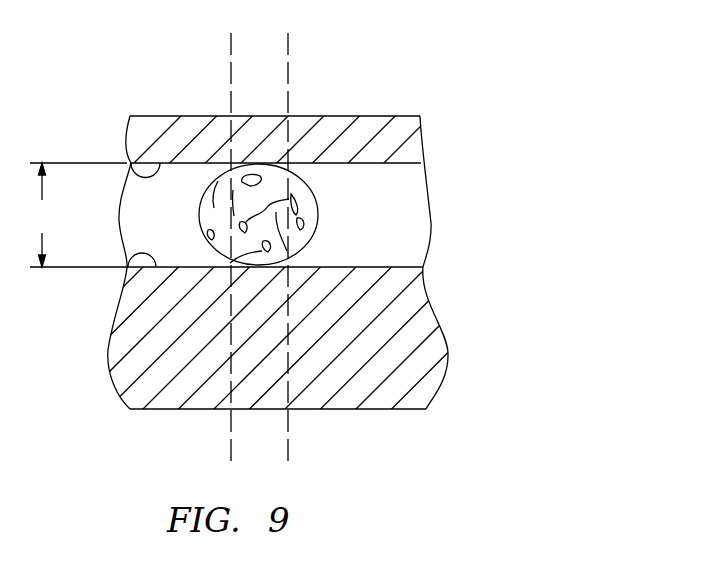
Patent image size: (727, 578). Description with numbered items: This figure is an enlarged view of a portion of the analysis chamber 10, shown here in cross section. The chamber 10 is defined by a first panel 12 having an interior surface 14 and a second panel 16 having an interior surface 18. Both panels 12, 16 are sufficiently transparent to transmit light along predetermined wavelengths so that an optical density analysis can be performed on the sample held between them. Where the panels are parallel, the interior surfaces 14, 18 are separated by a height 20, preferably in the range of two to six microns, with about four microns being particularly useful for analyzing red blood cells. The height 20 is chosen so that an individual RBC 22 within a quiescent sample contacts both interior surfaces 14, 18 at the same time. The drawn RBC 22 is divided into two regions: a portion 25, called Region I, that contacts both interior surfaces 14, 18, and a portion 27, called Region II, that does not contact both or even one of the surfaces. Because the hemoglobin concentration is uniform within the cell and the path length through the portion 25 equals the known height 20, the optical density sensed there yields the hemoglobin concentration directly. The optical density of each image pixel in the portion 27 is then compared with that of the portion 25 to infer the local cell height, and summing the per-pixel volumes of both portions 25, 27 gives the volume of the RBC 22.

The analysis chamber 10 is at (398, 196).
The first panel 12 is at (168, 116).
The interior surface 14 is at (128, 165).
The second panel 16 is at (384, 409).
The interior surface 18 is at (128, 268).
The height 20 is at (77, 215).
The RBC 22 is at (337, 233).
The portion 25 is at (279, 170).
The portion 27 is at (208, 190).